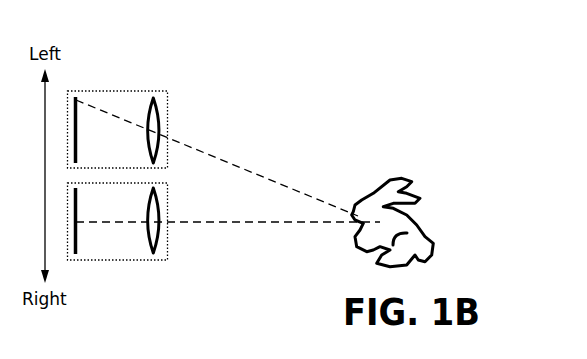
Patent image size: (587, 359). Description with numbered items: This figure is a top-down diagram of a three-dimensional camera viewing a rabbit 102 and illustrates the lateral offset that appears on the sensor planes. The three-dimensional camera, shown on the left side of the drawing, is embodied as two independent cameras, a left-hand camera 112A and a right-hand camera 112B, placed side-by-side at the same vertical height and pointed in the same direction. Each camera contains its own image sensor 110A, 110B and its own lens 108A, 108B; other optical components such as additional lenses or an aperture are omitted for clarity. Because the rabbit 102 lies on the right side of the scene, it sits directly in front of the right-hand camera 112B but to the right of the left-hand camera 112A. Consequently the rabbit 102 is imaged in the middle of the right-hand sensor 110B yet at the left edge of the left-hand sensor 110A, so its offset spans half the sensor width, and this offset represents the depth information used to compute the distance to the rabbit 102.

The rabbit 102 is at (438, 221).
The lens 108A is at (153, 96).
The lens 108B is at (153, 255).
The image sensor 110A is at (137, 64).
The image sensor 110B is at (78, 245).
The left-hand camera 112A is at (245, 94).
The right-hand camera 112B is at (245, 275).